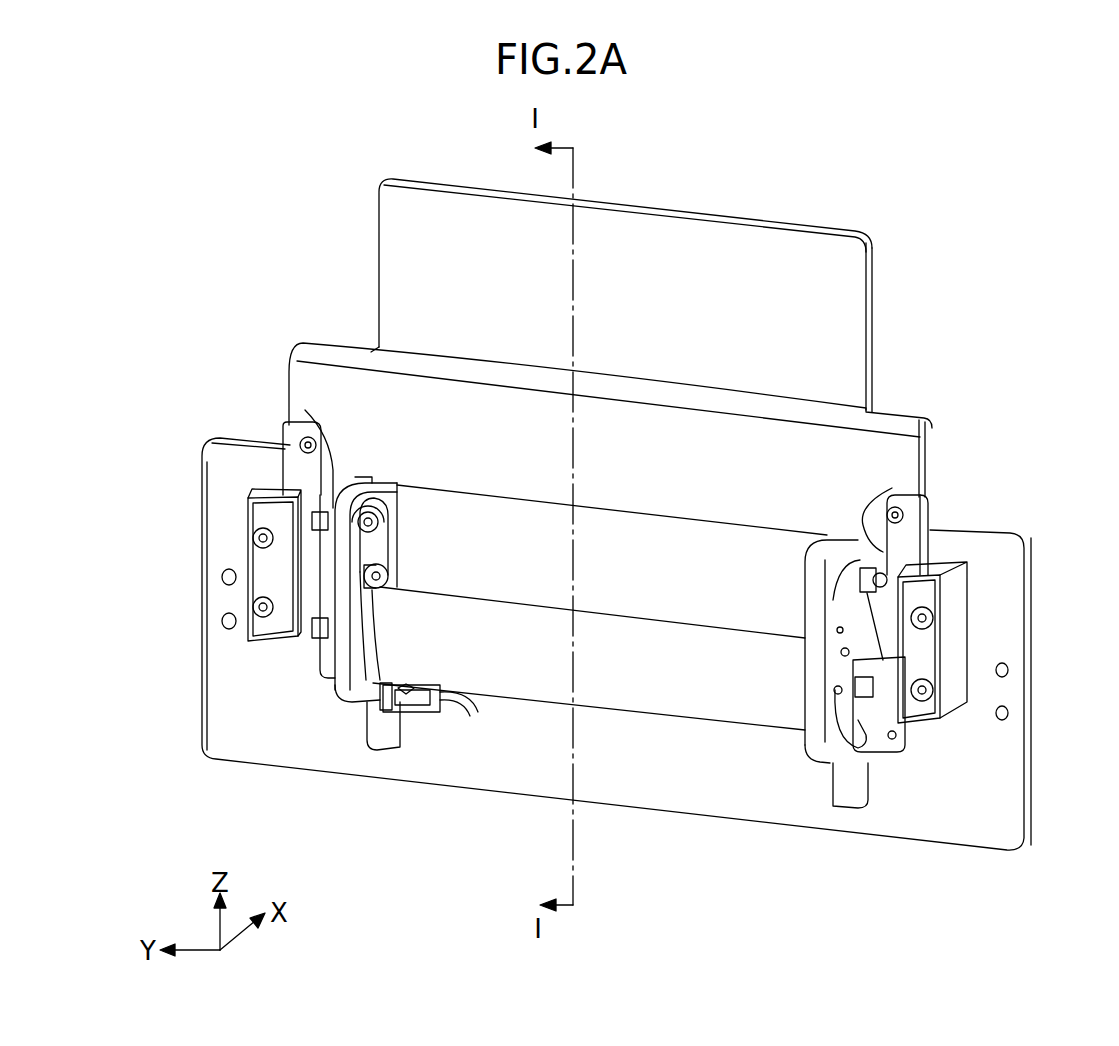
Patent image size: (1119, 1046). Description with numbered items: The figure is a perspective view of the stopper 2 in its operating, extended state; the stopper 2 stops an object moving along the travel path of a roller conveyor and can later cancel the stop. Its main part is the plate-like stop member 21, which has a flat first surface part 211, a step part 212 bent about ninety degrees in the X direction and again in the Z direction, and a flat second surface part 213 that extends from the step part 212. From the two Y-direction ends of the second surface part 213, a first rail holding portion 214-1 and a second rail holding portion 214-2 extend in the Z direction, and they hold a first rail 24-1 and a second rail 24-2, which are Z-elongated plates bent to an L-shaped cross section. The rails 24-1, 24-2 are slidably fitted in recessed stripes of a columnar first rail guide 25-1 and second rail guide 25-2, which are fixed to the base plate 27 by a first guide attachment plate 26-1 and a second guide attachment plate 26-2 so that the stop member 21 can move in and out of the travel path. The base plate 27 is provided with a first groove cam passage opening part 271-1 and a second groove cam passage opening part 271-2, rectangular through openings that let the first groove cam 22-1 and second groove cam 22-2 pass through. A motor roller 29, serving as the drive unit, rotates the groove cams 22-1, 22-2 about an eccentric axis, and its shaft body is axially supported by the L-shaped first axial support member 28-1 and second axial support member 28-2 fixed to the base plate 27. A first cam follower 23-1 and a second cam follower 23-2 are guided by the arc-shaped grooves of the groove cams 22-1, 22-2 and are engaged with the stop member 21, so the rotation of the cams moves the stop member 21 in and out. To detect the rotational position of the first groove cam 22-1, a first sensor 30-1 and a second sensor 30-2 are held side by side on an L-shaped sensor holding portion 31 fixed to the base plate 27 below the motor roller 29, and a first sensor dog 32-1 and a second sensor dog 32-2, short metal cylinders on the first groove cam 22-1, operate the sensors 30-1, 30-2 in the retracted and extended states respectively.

The stopper 2 is at (792, 176).
The stop member 21 is at (845, 265).
The first surface part 211 is at (672, 237).
The step part 212 is at (823, 410).
The second surface part 213 is at (832, 470).
The first rail holding portion 214-1 is at (305, 410).
The second rail holding portion 214-2 is at (892, 488).
The first groove cam 22-1 is at (343, 687).
The second groove cam 22-2 is at (815, 740).
The first cam follower 23-1 is at (363, 540).
The second cam follower 23-2 is at (837, 597).
The first rail 24-1 is at (292, 440).
The second rail 24-2 is at (917, 522).
The first rail guide 25-1 is at (267, 490).
The second rail guide 25-2 is at (953, 568).
The first guide attachment plate 26-1 is at (260, 582).
The second guide attachment plate 26-2 is at (930, 668).
The base plate 27 is at (998, 798).
The first groove cam passage opening part 271-1 is at (385, 742).
The second groove cam passage opening part 271-2 is at (847, 792).
The first axial support member 28-1 is at (323, 655).
The second axial support member 28-2 is at (865, 737).
The motor roller 29 is at (643, 677).
The first sensor 30-1 is at (408, 707).
The second sensor 30-2 is at (447, 717).
The sensor holding portion 31 is at (423, 717).
The first sensor dog 32-1 is at (366, 573).
The second sensor dog 32-2 is at (378, 690).